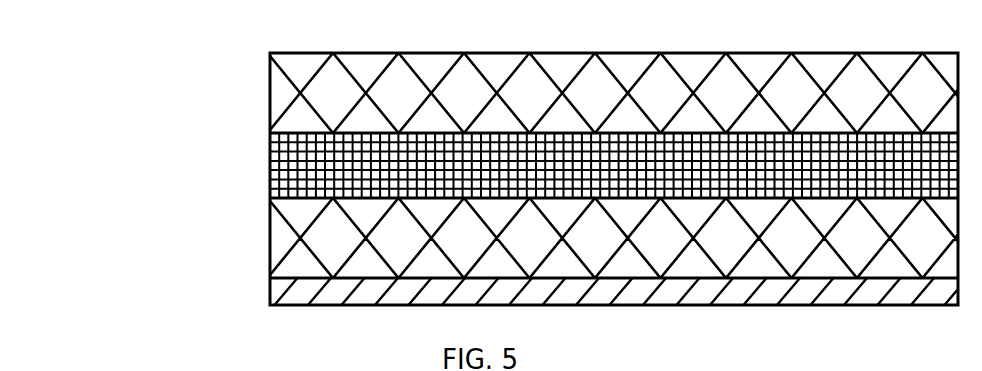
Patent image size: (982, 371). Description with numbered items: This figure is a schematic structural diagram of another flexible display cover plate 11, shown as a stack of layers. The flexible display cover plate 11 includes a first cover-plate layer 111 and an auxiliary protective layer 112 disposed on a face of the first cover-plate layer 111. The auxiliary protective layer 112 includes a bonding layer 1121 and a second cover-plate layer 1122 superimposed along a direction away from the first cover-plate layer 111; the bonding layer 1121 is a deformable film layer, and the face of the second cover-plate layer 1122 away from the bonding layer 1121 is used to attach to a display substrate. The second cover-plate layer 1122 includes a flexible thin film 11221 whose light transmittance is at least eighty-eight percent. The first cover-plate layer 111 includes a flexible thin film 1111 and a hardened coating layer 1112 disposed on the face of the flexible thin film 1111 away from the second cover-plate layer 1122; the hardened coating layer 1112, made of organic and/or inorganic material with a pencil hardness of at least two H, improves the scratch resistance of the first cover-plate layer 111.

The flexible display cover plate 11 is at (956, 34).
The auxiliary protective layer 112 is at (102, 97).
The second cover-plate layer 1122 is at (193, 96).
The flexible thin film 11221 is at (295, 96).
The bonding layer 1121 is at (295, 163).
The first cover-plate layer 111 is at (105, 232).
The flexible thin film 1111 is at (295, 233).
The hardened coating layer 1112 is at (295, 290).